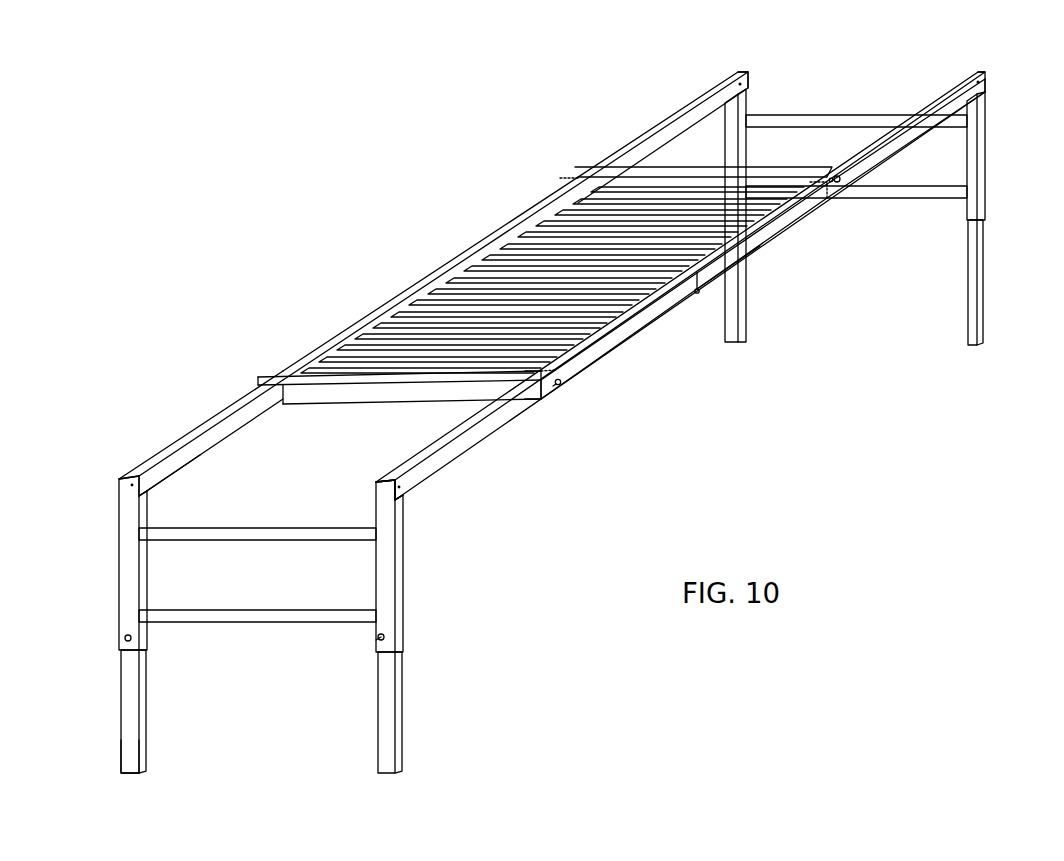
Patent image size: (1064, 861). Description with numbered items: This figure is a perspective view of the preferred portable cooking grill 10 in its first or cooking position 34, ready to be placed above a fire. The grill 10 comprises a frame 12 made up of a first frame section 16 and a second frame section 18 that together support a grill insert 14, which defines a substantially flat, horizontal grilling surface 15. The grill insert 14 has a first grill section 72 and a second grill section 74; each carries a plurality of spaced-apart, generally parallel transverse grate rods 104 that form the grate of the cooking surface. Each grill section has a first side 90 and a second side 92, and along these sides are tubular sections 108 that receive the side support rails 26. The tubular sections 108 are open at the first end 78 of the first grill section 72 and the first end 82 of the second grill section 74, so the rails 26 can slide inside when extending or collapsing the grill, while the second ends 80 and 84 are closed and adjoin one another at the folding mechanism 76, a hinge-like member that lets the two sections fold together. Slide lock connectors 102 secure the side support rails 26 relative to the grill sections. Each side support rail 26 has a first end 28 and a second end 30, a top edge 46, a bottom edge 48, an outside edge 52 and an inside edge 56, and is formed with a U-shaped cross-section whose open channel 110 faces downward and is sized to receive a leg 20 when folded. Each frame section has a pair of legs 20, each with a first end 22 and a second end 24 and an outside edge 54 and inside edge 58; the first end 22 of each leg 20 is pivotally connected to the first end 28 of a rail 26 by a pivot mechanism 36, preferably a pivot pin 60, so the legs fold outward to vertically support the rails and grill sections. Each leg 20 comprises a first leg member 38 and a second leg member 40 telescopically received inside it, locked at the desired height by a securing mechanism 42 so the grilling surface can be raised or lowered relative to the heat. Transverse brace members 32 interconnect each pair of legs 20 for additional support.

The portable cooking grill 10 is at (330, 145).
The frame 12 is at (110, 568).
The grill insert 14 is at (357, 395).
The grilling surface 15 is at (480, 310).
The first frame section 16 is at (418, 503).
The second frame section 18 is at (912, 208).
The legs 20 is at (110, 618).
The first end 22 is at (110, 502).
The second end 24 is at (112, 760).
The side support rails 26 is at (933, 100).
The first end 28 is at (133, 458).
The second end 30 is at (827, 206).
The transverse brace members 32 is at (245, 615).
The cooking position 34 is at (880, 100).
The pivot mechanism 36 is at (370, 478).
The first leg member 38 is at (404, 578).
The second leg member 40 is at (405, 674).
The securing mechanism 42 is at (378, 640).
The top edge 46 is at (655, 128).
The bottom edge 48 is at (175, 483).
The outside edge 52 is at (935, 112).
The outside edge 54 is at (985, 150).
The inside edge 56 is at (706, 97).
The inside edge 58 is at (743, 99).
The pivot pin 60 is at (990, 84).
The first grill section 72 is at (410, 324).
The second grill section 74 is at (560, 214).
The folding mechanism 76 is at (698, 300).
The first end 78 is at (405, 397).
The second end 80 is at (682, 300).
The first end 82 is at (826, 110).
The second end 84 is at (713, 274).
The first side 90 is at (312, 338).
The second side 92 is at (598, 355).
The slide lock connectors 102 is at (563, 393).
The transverse grate rods 104 is at (357, 342).
The tubular sections 108 is at (527, 401).
The open channel 110 is at (374, 490).